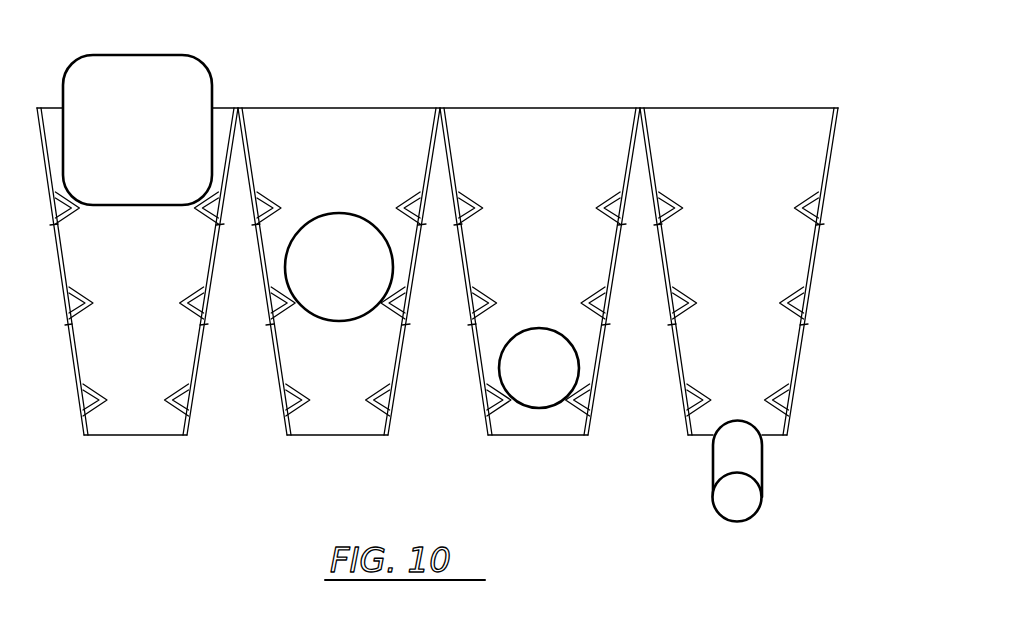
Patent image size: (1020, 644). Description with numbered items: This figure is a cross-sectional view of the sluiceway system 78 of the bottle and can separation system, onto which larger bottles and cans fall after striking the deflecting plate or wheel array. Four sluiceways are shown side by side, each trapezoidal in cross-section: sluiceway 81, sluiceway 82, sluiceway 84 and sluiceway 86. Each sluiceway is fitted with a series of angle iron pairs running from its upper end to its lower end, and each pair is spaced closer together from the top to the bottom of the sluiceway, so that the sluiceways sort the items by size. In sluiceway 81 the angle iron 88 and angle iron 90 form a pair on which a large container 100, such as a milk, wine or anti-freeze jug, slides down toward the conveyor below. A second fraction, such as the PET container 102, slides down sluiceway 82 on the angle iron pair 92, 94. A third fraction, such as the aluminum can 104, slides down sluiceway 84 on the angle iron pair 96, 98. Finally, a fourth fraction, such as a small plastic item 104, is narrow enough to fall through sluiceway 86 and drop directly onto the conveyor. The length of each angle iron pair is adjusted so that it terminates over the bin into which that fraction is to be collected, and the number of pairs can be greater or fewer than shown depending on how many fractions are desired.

The sluiceway system 78 is at (653, 62).
The sluiceway 81 is at (135, 436).
The sluiceway 82 is at (333, 436).
The sluiceway 84 is at (557, 436).
The sluiceway 86 is at (775, 436).
The angle iron 88 is at (62, 228).
The angle iron 90 is at (203, 224).
The angle iron 92 is at (290, 316).
The angle iron 94 is at (392, 318).
The angle iron 96 is at (488, 386).
The angle iron 98 is at (588, 388).
The large container 100 is at (212, 75).
The PET container 102 is at (325, 213).
The aluminum can 104 is at (527, 330).